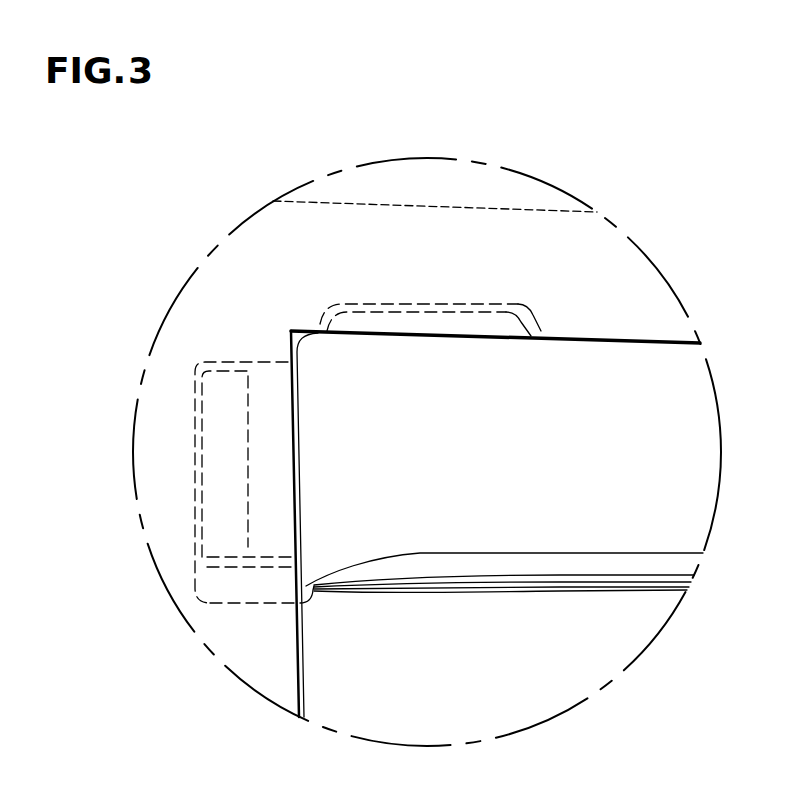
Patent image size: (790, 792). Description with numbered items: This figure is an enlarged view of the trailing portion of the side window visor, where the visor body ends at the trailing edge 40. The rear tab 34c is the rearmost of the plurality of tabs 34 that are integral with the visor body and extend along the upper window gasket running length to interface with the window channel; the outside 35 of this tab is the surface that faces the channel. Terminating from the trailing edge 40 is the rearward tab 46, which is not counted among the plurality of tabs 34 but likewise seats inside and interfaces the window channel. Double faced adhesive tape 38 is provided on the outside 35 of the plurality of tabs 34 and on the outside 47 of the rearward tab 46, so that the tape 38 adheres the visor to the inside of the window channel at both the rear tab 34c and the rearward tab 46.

The plurality of tabs 34 is at (430, 305).
The rear tab 34c is at (503, 307).
The outside of tab 35 is at (517, 310).
The double faced adhesive tape 38 is at (215, 390).
The trailing edge 40 is at (302, 451).
The rearward tab 46 is at (260, 605).
The outside of rearward tab 47 is at (268, 387).